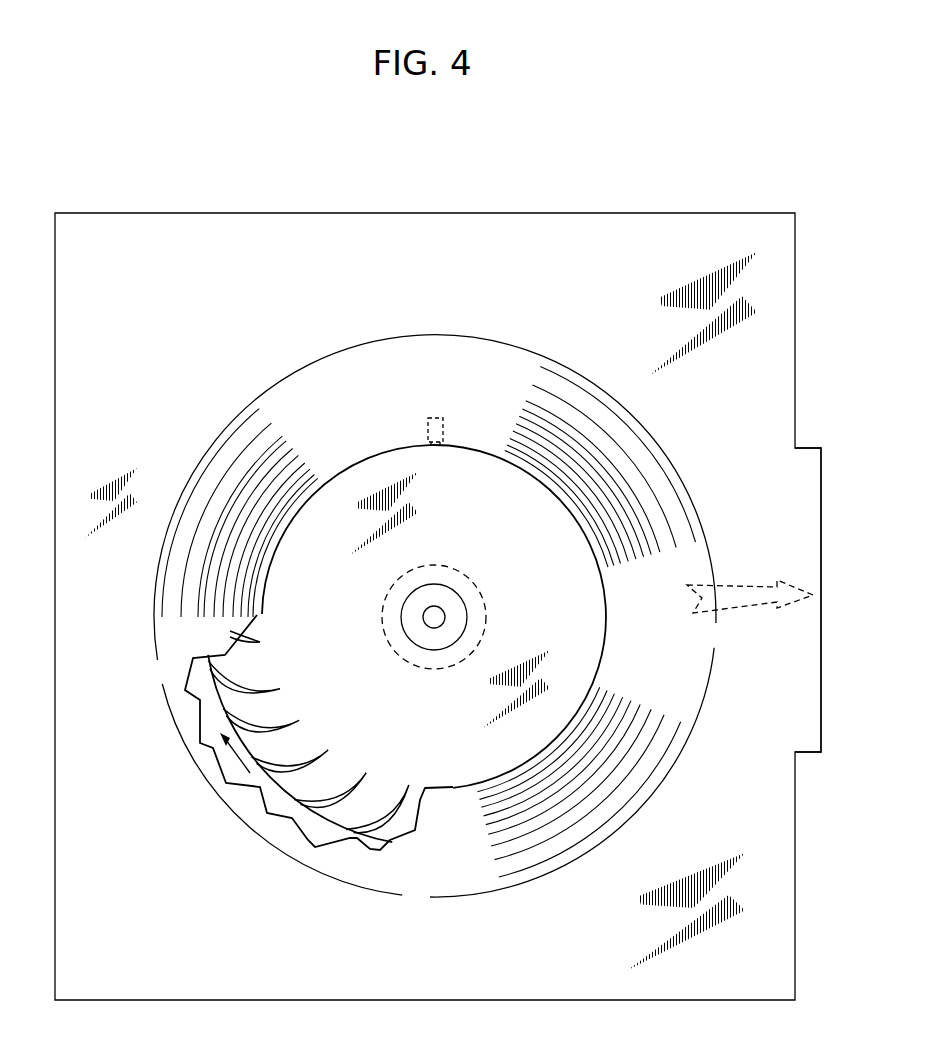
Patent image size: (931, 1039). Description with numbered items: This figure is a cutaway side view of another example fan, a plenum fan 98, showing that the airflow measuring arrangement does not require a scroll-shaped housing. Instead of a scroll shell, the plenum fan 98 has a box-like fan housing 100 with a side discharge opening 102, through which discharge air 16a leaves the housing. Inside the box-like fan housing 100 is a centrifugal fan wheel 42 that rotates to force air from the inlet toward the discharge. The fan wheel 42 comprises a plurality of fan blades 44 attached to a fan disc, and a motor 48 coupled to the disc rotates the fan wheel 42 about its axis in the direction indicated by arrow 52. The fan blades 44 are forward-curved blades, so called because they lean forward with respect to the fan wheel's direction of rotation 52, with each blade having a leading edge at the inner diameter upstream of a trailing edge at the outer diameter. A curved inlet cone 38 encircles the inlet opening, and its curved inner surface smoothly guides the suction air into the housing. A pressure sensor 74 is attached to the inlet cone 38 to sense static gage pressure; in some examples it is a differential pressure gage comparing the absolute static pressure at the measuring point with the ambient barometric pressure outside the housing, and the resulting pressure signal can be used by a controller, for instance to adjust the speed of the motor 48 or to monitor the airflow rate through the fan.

The plenum fan 98 is at (677, 182).
The box-like fan housing 100 is at (363, 213).
The side discharge opening 102 is at (821, 638).
The discharge air 16a is at (740, 590).
The curved inlet cone 38 is at (448, 787).
The motor 48 is at (382, 618).
The pressure sensor 74 is at (428, 432).
The centrifugal fan wheel 42 is at (220, 708).
The direction of rotation 52 is at (237, 760).
The fan blades 44 is at (341, 797).